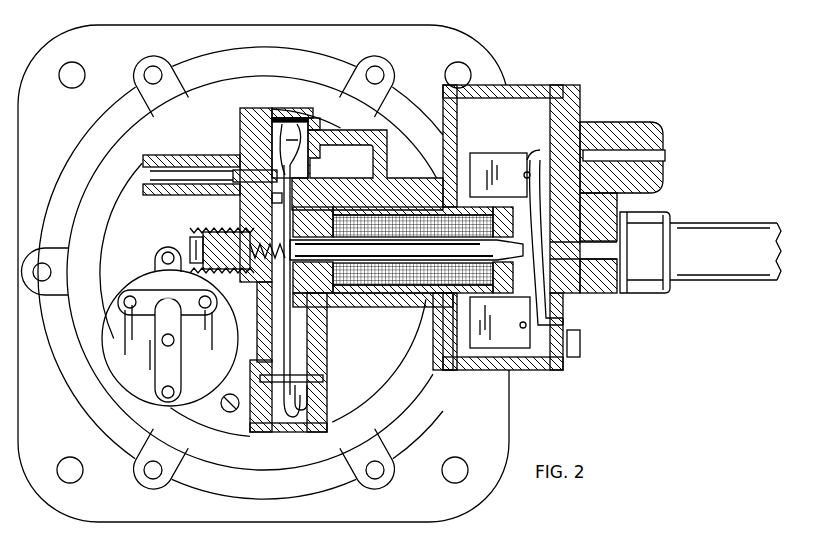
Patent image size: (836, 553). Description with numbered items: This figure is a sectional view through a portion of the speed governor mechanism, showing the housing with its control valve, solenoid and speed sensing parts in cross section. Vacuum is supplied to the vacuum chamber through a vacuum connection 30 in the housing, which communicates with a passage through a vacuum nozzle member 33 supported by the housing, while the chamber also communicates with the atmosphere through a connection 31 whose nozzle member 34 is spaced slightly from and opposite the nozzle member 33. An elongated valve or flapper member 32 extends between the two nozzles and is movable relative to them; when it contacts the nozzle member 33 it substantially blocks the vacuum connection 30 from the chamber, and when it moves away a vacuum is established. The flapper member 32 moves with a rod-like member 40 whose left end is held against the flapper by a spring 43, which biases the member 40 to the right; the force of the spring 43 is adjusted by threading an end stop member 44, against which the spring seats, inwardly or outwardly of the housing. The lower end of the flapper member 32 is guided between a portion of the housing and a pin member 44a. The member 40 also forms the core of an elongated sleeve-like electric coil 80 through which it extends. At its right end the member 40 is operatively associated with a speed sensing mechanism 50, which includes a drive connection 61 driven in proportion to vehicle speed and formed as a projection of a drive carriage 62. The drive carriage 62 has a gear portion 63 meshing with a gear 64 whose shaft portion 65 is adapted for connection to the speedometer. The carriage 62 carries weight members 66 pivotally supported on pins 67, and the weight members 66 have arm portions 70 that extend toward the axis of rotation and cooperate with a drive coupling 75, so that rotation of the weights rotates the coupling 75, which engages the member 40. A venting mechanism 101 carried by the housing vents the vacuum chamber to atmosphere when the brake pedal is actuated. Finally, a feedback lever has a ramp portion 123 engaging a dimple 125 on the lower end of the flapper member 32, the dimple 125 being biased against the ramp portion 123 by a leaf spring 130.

The vacuum connection 30 is at (200, 155).
The atmospheric connection 31 is at (345, 152).
The flapper member 32 is at (283, 115).
The vacuum nozzle member 33 is at (240, 197).
The nozzle member 34 is at (322, 116).
The member 40 is at (387, 262).
The spring 43 is at (195, 240).
The end stop member 44 is at (190, 264).
The pin member 44a is at (326, 372).
The speed sensing mechanism 50 is at (490, 143).
The drive connection 61 is at (600, 283).
The drive carriage 62 is at (537, 370).
The gear portion 63 is at (565, 206).
The gear 64 is at (590, 118).
The shaft portion 65 is at (666, 155).
The weight members 66 is at (503, 165).
The pins 67 is at (527, 170).
The arm portions 70 is at (618, 240).
The drive coupling 75 is at (468, 247).
The electric coil 80 is at (414, 292).
The venting mechanism 101 is at (110, 378).
The ramp portion 123 is at (262, 365).
The dimple 125 is at (273, 430).
The leaf spring 130 is at (303, 432).